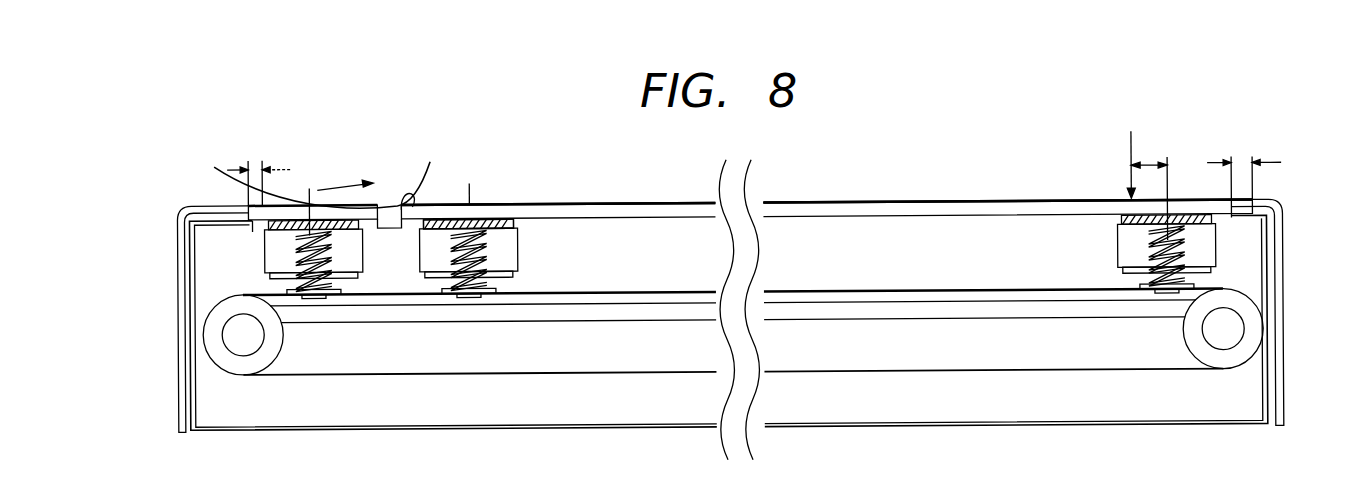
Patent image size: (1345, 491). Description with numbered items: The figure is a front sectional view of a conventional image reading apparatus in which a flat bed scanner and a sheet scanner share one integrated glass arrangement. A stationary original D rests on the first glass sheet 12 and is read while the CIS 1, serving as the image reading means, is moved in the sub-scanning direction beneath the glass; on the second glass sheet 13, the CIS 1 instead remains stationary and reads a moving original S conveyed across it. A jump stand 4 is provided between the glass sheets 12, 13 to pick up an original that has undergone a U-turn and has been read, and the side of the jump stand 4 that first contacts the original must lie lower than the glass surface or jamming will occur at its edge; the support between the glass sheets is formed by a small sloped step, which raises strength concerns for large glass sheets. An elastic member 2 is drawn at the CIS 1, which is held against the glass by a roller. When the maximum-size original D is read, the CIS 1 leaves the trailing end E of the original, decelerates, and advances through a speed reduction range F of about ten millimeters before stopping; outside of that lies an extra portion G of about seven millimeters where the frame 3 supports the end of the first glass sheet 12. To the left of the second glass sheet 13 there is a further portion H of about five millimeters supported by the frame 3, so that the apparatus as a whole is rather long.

The CIS 1 is at (280, 251).
The elastic member 2 is at (483, 218).
The frame 3 is at (185, 236).
The jump stand 4 is at (415, 195).
The first glass sheet 12 is at (860, 203).
The second glass sheet 13 is at (297, 203).
The original D is at (603, 203).
The moving original S is at (398, 181).
The portion supported by the frame H is at (259, 172).
The trailing end of the original E is at (1131, 151).
The speed reduction range F is at (1149, 189).
The extra portion G is at (1244, 176).